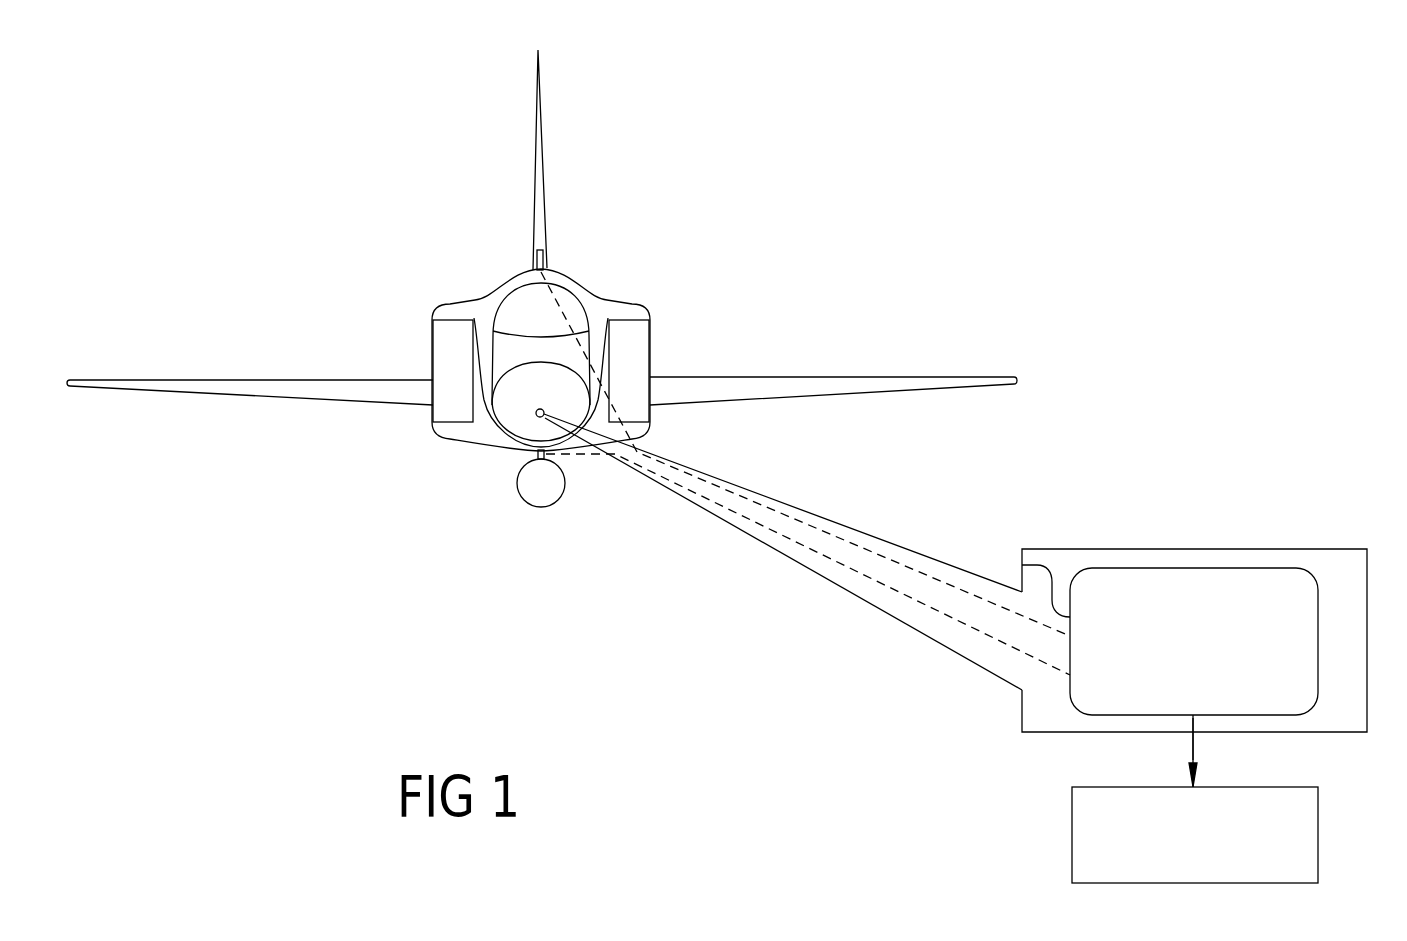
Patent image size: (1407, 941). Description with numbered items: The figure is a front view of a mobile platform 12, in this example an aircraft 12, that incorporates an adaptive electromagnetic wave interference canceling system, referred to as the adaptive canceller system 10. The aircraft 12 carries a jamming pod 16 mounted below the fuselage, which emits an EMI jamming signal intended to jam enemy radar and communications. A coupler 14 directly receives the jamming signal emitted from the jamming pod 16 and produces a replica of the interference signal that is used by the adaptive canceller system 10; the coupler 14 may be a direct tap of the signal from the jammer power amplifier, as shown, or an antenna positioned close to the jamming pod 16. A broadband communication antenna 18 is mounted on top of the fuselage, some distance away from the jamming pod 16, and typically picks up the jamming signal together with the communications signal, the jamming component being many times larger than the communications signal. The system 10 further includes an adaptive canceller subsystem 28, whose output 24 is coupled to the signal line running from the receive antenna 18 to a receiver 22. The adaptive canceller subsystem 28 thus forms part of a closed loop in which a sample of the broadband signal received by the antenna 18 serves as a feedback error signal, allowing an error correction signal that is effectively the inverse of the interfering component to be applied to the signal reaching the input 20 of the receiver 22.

The adaptive canceller system 10 is at (1005, 717).
The mobile platform 12 is at (382, 334).
The coupler 14 is at (537, 452).
The jamming pod 16 is at (545, 490).
The communication antenna 18 is at (545, 258).
The input of the receiver 20 is at (1192, 786).
The receiver 22 is at (1318, 808).
The output of the adaptive canceller subsystem 24 is at (1196, 718).
The adaptive canceller subsystem 28 is at (1193, 568).